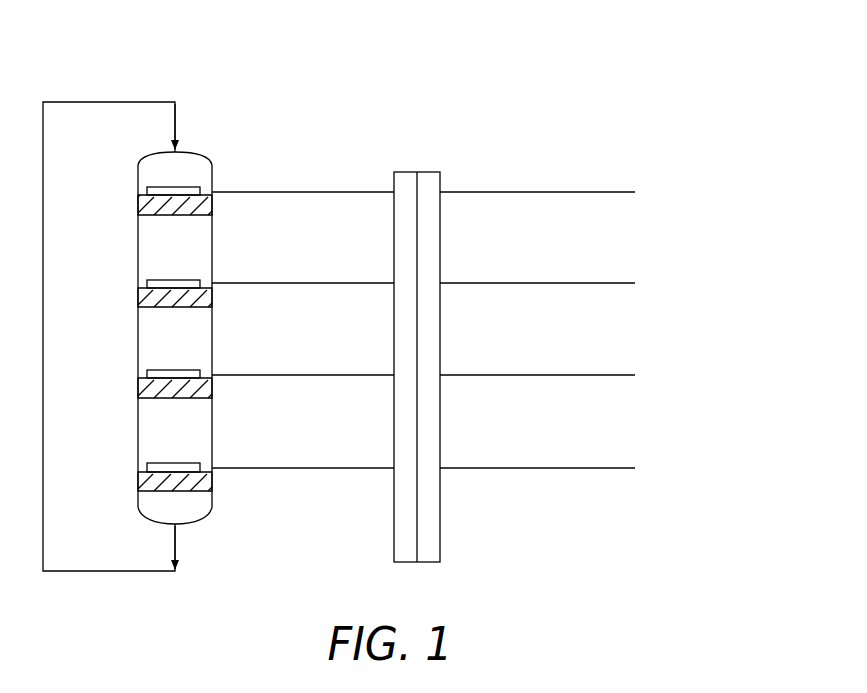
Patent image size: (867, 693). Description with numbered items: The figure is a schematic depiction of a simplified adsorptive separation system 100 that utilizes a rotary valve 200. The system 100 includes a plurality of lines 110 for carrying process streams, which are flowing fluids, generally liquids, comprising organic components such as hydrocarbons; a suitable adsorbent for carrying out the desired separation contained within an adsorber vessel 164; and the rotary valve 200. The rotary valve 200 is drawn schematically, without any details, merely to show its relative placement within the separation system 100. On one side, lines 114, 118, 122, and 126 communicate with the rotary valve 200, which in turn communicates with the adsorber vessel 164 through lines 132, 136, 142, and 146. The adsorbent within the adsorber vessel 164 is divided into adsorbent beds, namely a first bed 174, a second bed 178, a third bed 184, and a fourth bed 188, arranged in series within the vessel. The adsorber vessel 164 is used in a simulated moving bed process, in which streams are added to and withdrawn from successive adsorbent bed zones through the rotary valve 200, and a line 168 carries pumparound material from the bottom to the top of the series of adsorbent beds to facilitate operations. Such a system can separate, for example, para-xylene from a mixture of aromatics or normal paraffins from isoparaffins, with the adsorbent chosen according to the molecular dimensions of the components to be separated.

The adsorptive separation system 100 is at (640, 42).
The lines 110 is at (747, 131).
The line 114 is at (562, 190).
The line 118 is at (562, 282).
The line 122 is at (562, 374).
The line 126 is at (562, 467).
The line 132 is at (322, 190).
The line 136 is at (322, 282).
The line 142 is at (322, 374).
The line 146 is at (322, 467).
The adsorber vessel 164 is at (201, 522).
The line 168 is at (110, 101).
The first bed 174 is at (192, 187).
The second bed 178 is at (175, 279).
The third bed 184 is at (175, 369).
The fourth bed 188 is at (175, 462).
The rotary valve 200 is at (435, 144).